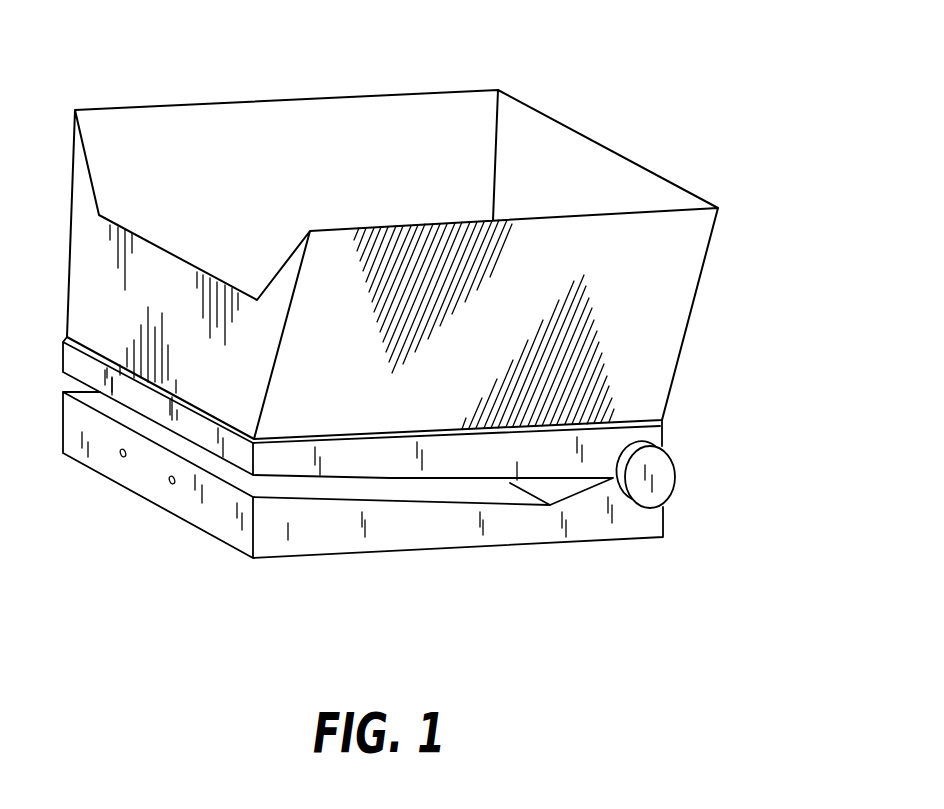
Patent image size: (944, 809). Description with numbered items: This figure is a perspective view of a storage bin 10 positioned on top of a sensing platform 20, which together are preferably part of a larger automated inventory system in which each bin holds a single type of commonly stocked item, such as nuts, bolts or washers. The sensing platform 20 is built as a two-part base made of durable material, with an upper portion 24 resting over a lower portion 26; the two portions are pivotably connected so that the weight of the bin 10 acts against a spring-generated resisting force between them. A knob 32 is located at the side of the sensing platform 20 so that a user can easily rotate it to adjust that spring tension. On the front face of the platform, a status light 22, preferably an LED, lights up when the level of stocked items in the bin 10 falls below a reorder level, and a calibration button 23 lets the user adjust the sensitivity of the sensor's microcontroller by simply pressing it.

The storage bin 10 is at (527, 102).
The sensing platform 20 is at (426, 486).
The status light 22 is at (118, 457).
The calibration button 23 is at (167, 483).
The upper portion 24 is at (655, 435).
The lower portion 26 is at (647, 523).
The knob 32 is at (660, 480).